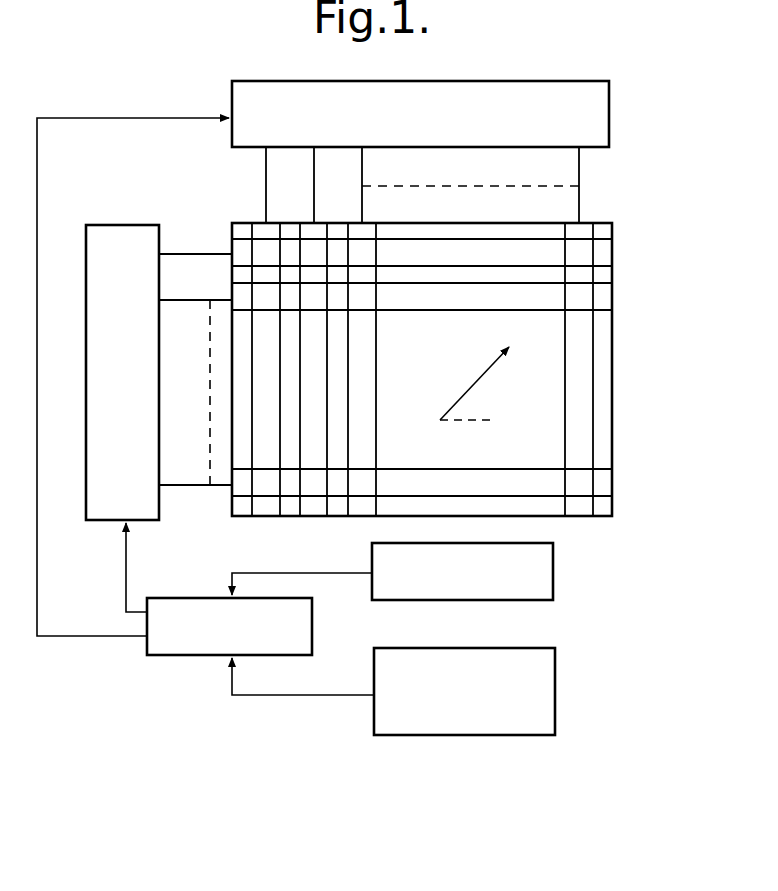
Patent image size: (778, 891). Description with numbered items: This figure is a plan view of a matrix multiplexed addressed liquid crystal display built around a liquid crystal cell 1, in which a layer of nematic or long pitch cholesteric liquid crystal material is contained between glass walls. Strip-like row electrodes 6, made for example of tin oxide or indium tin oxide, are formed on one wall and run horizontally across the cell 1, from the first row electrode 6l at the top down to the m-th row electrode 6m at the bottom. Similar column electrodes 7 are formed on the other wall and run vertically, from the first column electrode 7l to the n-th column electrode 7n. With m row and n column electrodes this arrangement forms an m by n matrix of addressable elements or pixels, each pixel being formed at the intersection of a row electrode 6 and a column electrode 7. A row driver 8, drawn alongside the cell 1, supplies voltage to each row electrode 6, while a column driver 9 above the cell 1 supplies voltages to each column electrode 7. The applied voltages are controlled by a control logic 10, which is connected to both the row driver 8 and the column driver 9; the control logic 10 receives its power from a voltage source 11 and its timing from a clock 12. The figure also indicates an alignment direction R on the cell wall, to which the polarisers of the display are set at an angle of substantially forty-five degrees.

The liquid crystal cell 1 is at (616, 430).
The row electrodes 6 is at (545, 485).
The first row electrode 6l is at (190, 254).
The m-th row electrode 6m is at (200, 485).
The column electrodes 7 is at (583, 360).
The first column electrode 7l is at (266, 178).
The n-th column electrode 7n is at (579, 170).
The row driver 8 is at (113, 226).
The column driver 9 is at (609, 110).
The control logic 10 is at (305, 626).
The voltage source 11 is at (548, 690).
The clock 12 is at (545, 583).